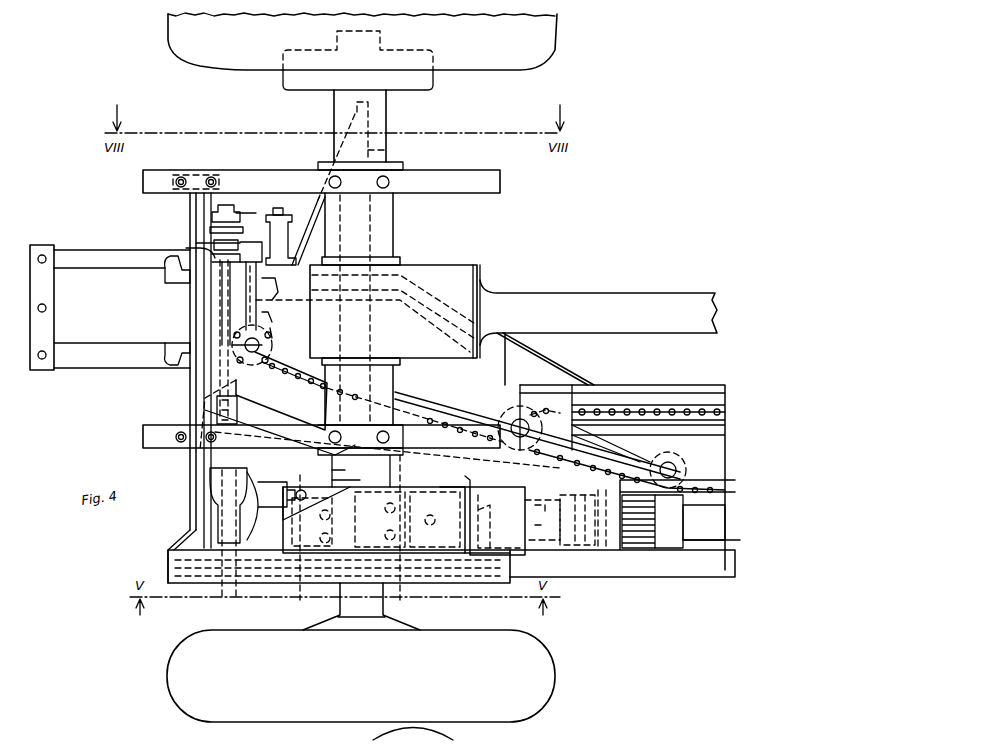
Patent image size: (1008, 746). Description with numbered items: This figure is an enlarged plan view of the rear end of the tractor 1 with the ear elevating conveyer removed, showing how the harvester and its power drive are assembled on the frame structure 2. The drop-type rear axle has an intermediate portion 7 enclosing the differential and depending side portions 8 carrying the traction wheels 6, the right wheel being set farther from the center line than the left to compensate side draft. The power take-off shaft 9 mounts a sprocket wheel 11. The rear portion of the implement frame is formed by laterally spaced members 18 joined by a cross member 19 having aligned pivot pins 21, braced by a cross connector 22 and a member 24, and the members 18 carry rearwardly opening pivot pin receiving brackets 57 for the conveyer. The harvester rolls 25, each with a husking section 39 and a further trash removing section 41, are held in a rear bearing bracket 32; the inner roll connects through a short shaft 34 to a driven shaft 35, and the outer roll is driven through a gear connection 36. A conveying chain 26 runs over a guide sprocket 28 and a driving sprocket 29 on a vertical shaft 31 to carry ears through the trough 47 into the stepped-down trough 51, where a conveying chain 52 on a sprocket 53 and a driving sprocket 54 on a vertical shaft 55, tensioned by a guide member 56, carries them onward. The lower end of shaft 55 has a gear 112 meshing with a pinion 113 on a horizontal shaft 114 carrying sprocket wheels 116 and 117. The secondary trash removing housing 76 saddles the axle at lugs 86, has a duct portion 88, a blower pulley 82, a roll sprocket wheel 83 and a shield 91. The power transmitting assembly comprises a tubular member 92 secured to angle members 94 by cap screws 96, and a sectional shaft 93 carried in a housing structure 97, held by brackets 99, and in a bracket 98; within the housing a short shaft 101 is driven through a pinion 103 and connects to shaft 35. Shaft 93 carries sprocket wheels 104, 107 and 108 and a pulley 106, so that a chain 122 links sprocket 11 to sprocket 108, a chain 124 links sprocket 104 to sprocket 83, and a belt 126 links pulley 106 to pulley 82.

The tractor 1 is at (596, 313).
The frame structure 2 is at (528, 293).
The traction wheels 6 is at (553, 38).
The intermediate portion of rear axle structure 7 is at (393, 230).
The depending side portions of rear axle 8 is at (433, 84).
The power take-off shaft 9 is at (276, 207).
The power transmitting sprocket wheel 11 is at (292, 210).
The laterally spaced members 18 is at (96, 250).
The cross member 19 is at (387, 146).
The pivot pins 21 is at (336, 104).
The cross connector 22 is at (54, 296).
The bracing member 24 is at (361, 309).
The harvester rolls 25 is at (670, 548).
The conveying chain 26 is at (605, 410).
The guide sprocket 28 is at (682, 462).
The driving sprocket 29 is at (545, 432).
The vertical shaft 31 is at (510, 418).
The rear bearing bracket 32 is at (602, 550).
The short shaft 34 is at (497, 521).
The driven shaft 35 is at (350, 478).
The gear connection 36 is at (575, 522).
The husking section 39 is at (735, 540).
The primary trash removing section 41 is at (640, 548).
The trough 47 is at (704, 522).
The trough 51 is at (281, 391).
The conveying chain 52 is at (484, 380).
The sprocket 53 is at (545, 404).
The driving sprocket 54 is at (270, 352).
The vertical shaft 55 is at (248, 366).
The guide member 56 is at (378, 320).
The pivot pin receiving brackets 57 is at (165, 278).
The housing 76 is at (462, 487).
The V-belt pulley 82 is at (465, 560).
The sprocket wheel 83 is at (465, 583).
The lugs or bosses 86 is at (374, 527).
The duct portion 88 is at (526, 535).
The pulley and sprocket wheel shield 91 is at (262, 583).
The rigid tubular member 92 is at (190, 210).
The sectional shaft 93 is at (237, 410).
The angle members 94 is at (143, 182).
The cap screws 96 is at (359, 309).
The housing structure 97 is at (248, 470).
The bracket 98 is at (186, 248).
The brackets 99 is at (180, 540).
The short shaft 101 is at (298, 478).
The pinion 103 is at (204, 470).
The sprocket wheel 104 is at (218, 575).
The V-belt pulley 106 is at (168, 553).
The sprocket wheel 107 is at (196, 243).
The sprocket wheel 108 is at (222, 205).
The gear 112 is at (274, 314).
The pinion 113 is at (283, 330).
The horizontal shaft 114 is at (277, 291).
The sprocket wheel 116 is at (256, 244).
The sprocket wheel 117 is at (267, 292).
The chain 122 is at (250, 207).
The chain 124 is at (302, 604).
The belt 126 is at (350, 583).